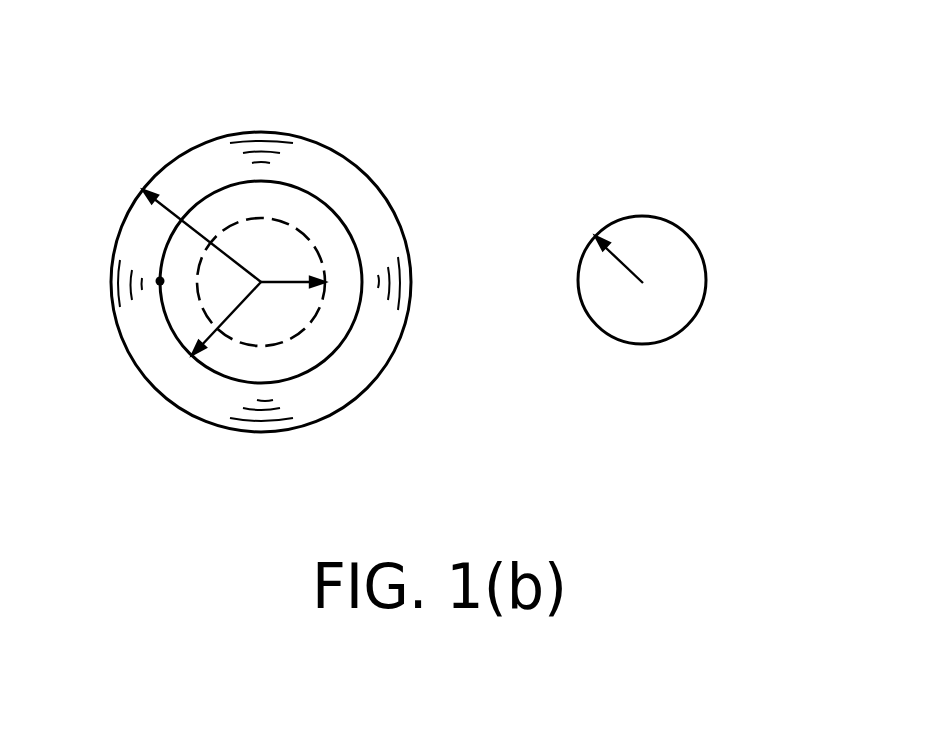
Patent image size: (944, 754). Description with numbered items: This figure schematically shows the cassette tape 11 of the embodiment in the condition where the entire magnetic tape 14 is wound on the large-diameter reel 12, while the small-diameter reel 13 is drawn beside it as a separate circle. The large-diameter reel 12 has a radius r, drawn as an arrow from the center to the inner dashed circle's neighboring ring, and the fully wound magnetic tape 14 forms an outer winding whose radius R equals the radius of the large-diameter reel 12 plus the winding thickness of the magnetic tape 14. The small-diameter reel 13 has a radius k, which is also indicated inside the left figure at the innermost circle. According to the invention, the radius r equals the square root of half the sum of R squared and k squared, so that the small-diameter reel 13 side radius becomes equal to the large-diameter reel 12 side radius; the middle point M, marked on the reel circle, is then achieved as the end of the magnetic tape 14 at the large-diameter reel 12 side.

The cassette tape 11 is at (724, 182).
The large-diameter reel 12 is at (343, 238).
The small-diameter reel 13 is at (685, 263).
The magnetic tape 14 is at (285, 157).
The radius of the fully wound large-diameter reel R is at (210, 240).
The radius of the large-diameter reel r is at (227, 320).
The radius of the small-diameter reel k is at (290, 283).
The middle point M is at (160, 281).